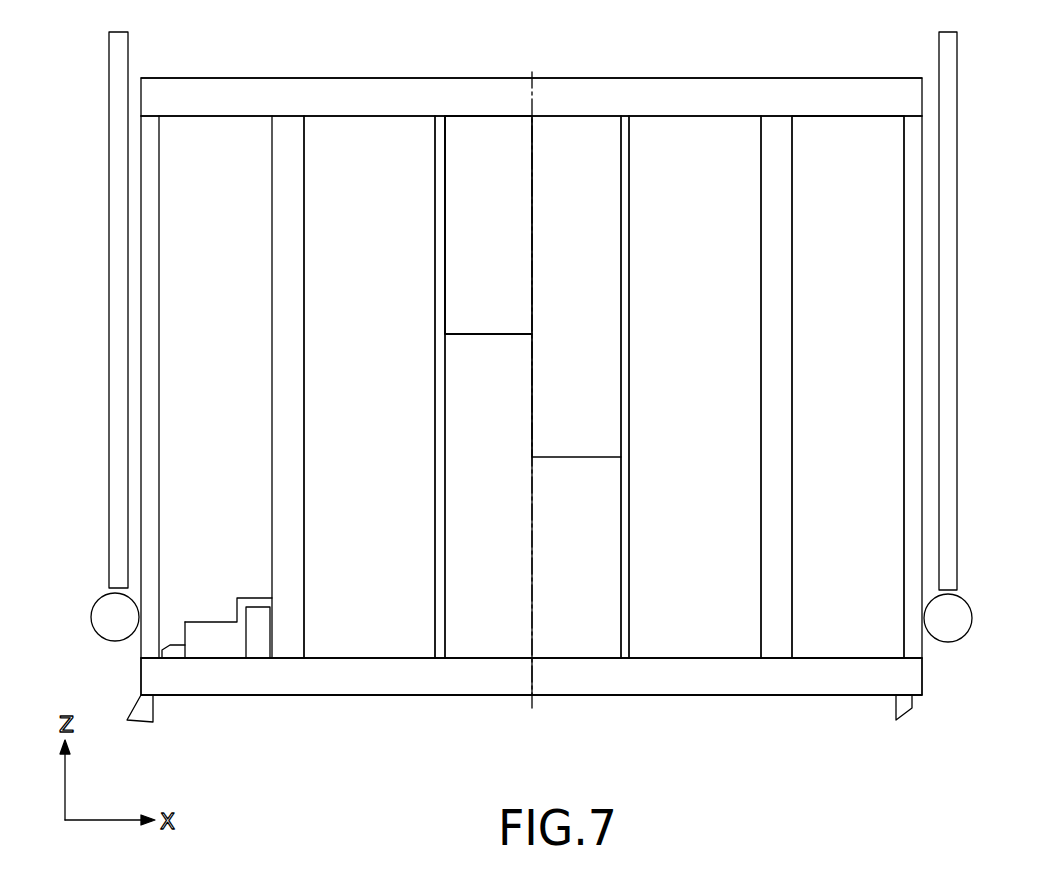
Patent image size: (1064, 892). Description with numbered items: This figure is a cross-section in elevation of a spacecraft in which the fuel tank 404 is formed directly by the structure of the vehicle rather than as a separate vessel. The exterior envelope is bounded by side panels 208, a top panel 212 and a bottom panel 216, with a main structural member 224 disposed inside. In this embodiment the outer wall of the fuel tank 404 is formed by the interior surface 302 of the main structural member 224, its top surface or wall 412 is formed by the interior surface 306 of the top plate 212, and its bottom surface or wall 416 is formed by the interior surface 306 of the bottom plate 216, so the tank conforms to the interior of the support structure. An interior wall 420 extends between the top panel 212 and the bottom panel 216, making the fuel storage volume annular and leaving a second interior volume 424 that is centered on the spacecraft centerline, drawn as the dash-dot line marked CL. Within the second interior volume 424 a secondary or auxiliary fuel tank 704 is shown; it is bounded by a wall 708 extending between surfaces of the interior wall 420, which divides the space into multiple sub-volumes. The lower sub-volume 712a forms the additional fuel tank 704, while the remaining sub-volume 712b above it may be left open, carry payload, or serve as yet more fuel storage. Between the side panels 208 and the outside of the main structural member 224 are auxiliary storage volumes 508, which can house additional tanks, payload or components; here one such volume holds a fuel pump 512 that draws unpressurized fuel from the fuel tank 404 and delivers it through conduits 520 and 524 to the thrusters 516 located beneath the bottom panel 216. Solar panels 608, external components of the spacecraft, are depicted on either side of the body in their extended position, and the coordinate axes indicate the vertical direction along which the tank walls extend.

The side panels 208 is at (150, 285).
The top panel 212 is at (683, 90).
The bottom panel 216 is at (777, 678).
The main structural member 224 is at (282, 648).
The interior surface of the main structural member 302 is at (762, 145).
The interior surfaces 306 is at (331, 117).
The fuel tank 404 is at (353, 648).
The top surface or wall 412 is at (657, 120).
The bottom surface or wall 416 is at (417, 643).
The interior wall 420 is at (438, 135).
The second interior volume 424 is at (542, 128).
The auxiliary storage volumes 508 is at (866, 350).
The fuel pump 512 is at (192, 632).
The thrusters 516 is at (140, 711).
The conduit 520 is at (253, 598).
The conduit 524 is at (183, 660).
The solar panels 608 is at (947, 529).
The secondary fuel tank 704 is at (512, 647).
The wall 708 is at (577, 457).
The lower sub-volume 712a is at (512, 504).
The remaining sub-volume 712b is at (528, 247).
The center line CL is at (530, 285).